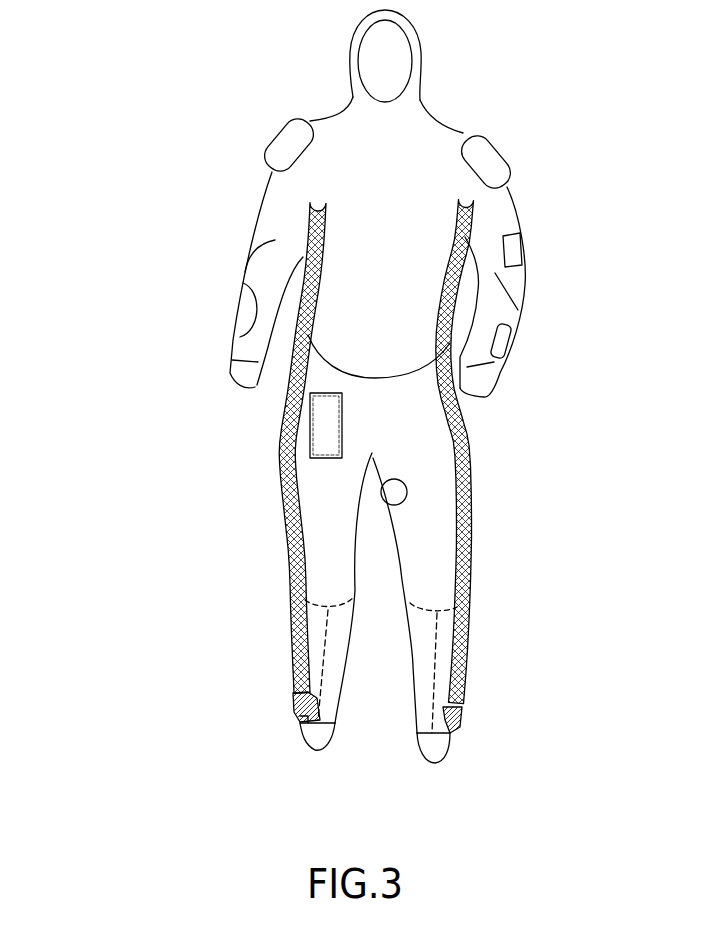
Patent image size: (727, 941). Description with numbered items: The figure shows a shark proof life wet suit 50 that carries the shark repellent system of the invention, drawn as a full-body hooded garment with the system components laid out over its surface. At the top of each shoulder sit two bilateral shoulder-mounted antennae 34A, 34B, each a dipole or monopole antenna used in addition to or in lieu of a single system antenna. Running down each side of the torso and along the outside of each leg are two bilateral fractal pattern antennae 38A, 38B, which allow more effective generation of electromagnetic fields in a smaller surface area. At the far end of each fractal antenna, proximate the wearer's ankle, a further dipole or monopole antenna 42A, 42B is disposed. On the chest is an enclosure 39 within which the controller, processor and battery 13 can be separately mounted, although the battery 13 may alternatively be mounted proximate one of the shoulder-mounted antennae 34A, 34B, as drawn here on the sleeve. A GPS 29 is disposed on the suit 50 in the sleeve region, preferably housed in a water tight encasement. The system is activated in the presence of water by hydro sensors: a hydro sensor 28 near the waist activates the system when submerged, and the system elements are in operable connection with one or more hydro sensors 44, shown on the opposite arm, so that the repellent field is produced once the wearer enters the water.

The shark proof life wet suit 50 is at (102, 210).
The shoulder-mounted antenna 34A is at (270, 146).
The shoulder-mounted antenna 34B is at (507, 155).
The hydro sensor 44 is at (240, 317).
The battery 13 is at (517, 252).
The GPS 29 is at (502, 347).
The enclosure 39 is at (317, 423).
The fractal pattern antenna 38A is at (288, 517).
The fractal pattern antenna 38B is at (468, 463).
The hydro sensor 28 is at (403, 497).
The dipole or monopole antenna 42A is at (295, 712).
The dipole or monopole antenna 42B is at (460, 723).